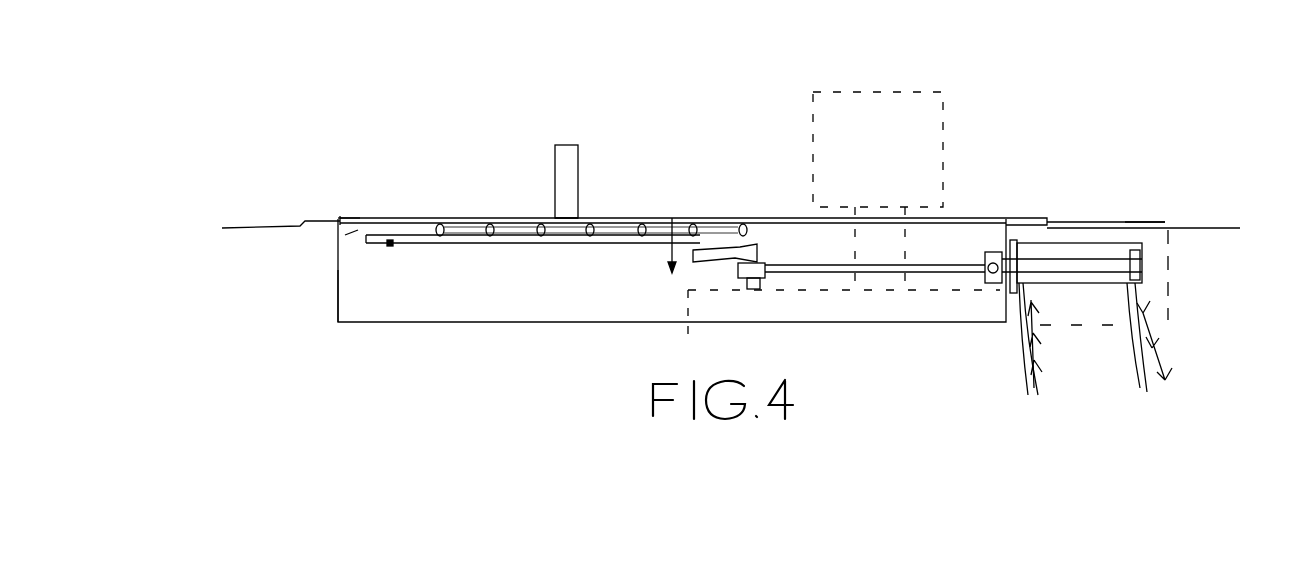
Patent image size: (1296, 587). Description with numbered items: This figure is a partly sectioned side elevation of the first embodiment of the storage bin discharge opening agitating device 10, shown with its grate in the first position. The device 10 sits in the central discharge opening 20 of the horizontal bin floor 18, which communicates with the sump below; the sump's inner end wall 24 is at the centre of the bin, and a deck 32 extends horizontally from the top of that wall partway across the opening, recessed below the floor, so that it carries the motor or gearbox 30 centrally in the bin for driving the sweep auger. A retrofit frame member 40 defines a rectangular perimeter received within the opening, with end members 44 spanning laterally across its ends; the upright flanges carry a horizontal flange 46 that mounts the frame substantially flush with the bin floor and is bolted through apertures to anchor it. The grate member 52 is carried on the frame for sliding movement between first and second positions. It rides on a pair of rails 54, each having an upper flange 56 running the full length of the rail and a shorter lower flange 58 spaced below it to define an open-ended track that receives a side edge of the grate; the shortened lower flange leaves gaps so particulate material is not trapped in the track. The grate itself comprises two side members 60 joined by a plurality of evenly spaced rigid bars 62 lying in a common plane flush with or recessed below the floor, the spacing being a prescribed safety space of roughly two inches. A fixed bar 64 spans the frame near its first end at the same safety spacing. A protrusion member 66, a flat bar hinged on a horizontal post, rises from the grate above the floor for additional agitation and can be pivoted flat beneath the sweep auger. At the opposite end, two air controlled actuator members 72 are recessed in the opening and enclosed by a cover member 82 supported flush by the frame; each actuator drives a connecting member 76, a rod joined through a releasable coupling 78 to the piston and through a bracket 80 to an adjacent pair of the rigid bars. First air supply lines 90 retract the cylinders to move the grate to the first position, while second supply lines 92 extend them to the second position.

The storage bin discharge opening agitating device 10 is at (210, 117).
The bin floor 18 is at (240, 222).
The central discharge opening 20 is at (672, 218).
The inner end wall 24 is at (682, 338).
The motor or gearbox 30 is at (893, 92).
The deck 32 is at (928, 292).
The retrofit frame member 40 is at (330, 318).
The end members 44 is at (338, 272).
The horizontal flange 46 is at (318, 221).
The grate member 52 is at (607, 215).
The rails 54 is at (345, 235).
The upper flange 56 is at (372, 219).
The lower flange 58 is at (430, 245).
The side members 60 is at (462, 220).
The rigid bars 62 is at (440, 222).
The fixed bar 64 is at (385, 247).
The protrusion member 66 is at (563, 145).
The actuator members 72 is at (1078, 243).
The connecting member 76 is at (818, 272).
The releasable coupling 78 is at (988, 250).
The bracket 80 is at (757, 244).
The cover member 82 is at (1125, 220).
The first air supply lines 90 is at (1030, 395).
The second supply lines 92 is at (1137, 392).